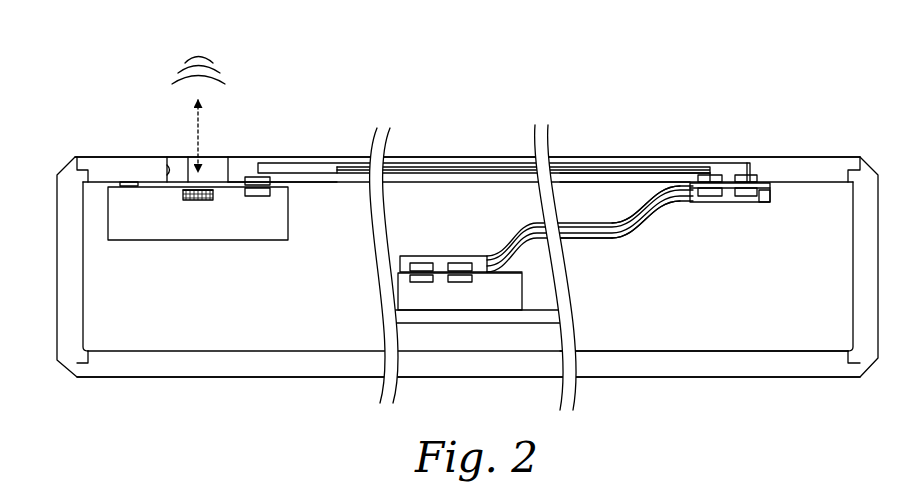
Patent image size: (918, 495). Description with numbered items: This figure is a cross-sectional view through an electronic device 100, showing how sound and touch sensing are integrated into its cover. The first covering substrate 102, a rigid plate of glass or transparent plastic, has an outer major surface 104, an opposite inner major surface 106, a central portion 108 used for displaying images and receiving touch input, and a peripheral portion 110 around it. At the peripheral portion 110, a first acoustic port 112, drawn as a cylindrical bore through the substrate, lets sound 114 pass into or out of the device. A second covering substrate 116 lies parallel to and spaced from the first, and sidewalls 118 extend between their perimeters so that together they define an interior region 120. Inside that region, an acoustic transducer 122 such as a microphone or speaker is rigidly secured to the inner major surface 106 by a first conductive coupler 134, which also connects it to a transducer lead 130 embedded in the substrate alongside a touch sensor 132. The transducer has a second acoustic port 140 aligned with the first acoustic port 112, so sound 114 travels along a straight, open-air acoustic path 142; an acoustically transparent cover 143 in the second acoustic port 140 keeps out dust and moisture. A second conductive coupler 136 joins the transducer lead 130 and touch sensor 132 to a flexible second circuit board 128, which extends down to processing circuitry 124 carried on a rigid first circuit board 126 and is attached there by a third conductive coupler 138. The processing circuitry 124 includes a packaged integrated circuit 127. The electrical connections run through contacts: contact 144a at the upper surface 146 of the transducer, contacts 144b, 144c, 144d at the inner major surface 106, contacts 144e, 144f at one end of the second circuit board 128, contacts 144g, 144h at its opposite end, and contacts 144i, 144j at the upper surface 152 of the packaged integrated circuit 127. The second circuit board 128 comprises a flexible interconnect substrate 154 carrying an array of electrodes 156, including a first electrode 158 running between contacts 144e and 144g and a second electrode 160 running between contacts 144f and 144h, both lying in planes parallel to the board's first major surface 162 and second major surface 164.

The electronic device 100 is at (829, 100).
The first covering substrate 102 is at (264, 98).
The outer major surface 104 is at (805, 155).
The inner major surface 106 is at (812, 186).
The central portion 108 is at (356, 156).
The peripheral portion 110 is at (309, 163).
The first acoustic port 112 is at (168, 170).
The sound 114 is at (200, 58).
The second covering substrate 116 is at (222, 374).
The sidewalls 118 is at (75, 276).
The interior region 120 is at (785, 334).
The acoustic transducer 122 is at (165, 225).
The processing circuitry 124 is at (396, 292).
The first circuit board 126 is at (542, 316).
The packaged integrated circuit 127 is at (403, 292).
The second circuit board 128 is at (631, 203).
The transducer lead 130 is at (579, 184).
The touch sensor 132 is at (483, 163).
The first conductive coupler 134 is at (288, 184).
The second conductive coupler 136 is at (746, 172).
The third conductive coupler 138 is at (404, 270).
The second acoustic port 140 is at (197, 202).
The acoustic path 142 is at (202, 104).
The acoustically transparent cover 143 is at (191, 188).
The contact 144a is at (257, 196).
The contact 144b is at (250, 177).
The contact 144c is at (711, 175).
The contact 144d is at (753, 175).
The contact 144e is at (711, 197).
The contact 144f is at (749, 197).
The contact 144g is at (420, 256).
The contact 144h is at (459, 256).
The contact 144i is at (421, 283).
The contact 144j is at (461, 283).
The upper surface 146 is at (125, 183).
The upper surface 152 is at (514, 265).
The interconnect substrate 154 is at (766, 203).
The array of electrodes 156 is at (652, 352).
The first electrode 158 is at (650, 224).
The second electrode 160 is at (628, 233).
The first major surface 162 is at (507, 231).
The second major surface 164 is at (610, 240).